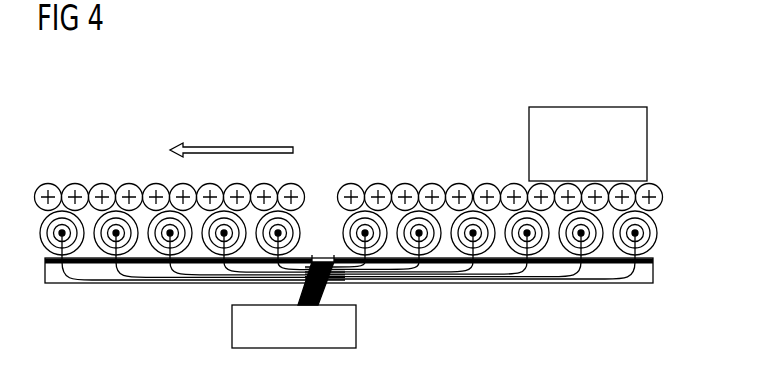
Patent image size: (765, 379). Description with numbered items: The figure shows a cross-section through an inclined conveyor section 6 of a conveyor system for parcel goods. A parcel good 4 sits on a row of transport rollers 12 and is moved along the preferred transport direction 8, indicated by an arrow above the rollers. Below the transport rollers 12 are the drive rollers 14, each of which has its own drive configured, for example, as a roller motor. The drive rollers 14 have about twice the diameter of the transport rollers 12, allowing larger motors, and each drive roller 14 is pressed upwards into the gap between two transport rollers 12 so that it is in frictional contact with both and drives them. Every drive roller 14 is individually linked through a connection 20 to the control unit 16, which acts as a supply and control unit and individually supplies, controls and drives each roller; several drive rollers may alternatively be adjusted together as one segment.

The parcel goods 4 is at (647, 135).
The inclined conveyor section 6 is at (95, 140).
The preferred transport direction 8 is at (238, 146).
The transport roller 12 is at (463, 186).
The drive roller 14 is at (657, 233).
The control unit 16 is at (356, 325).
The connection between control unit and drive roller 20 is at (618, 276).